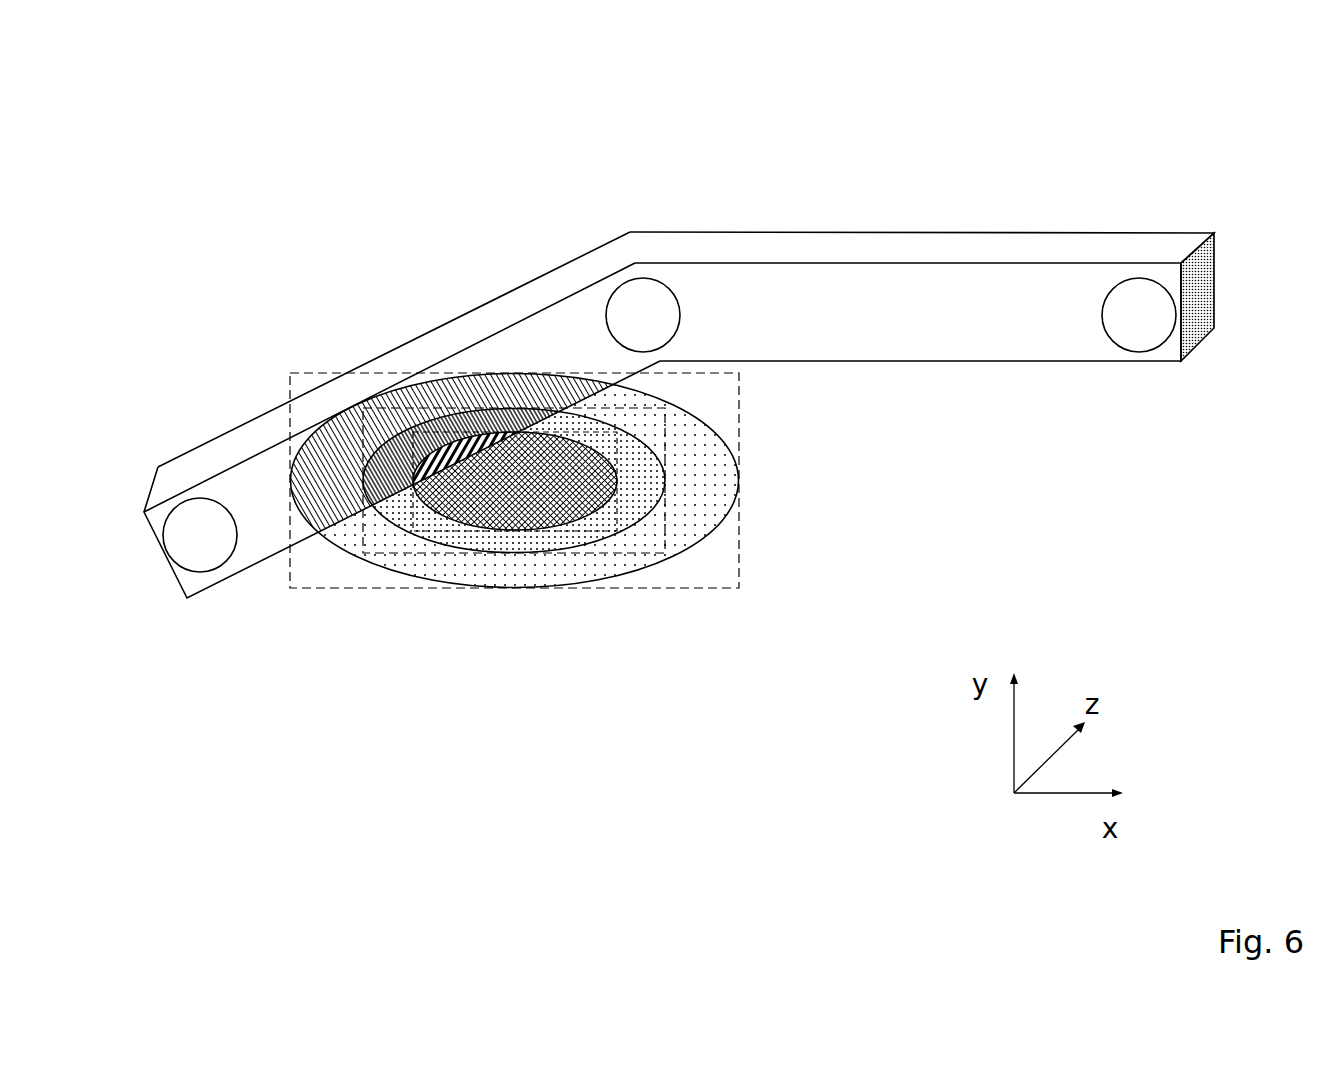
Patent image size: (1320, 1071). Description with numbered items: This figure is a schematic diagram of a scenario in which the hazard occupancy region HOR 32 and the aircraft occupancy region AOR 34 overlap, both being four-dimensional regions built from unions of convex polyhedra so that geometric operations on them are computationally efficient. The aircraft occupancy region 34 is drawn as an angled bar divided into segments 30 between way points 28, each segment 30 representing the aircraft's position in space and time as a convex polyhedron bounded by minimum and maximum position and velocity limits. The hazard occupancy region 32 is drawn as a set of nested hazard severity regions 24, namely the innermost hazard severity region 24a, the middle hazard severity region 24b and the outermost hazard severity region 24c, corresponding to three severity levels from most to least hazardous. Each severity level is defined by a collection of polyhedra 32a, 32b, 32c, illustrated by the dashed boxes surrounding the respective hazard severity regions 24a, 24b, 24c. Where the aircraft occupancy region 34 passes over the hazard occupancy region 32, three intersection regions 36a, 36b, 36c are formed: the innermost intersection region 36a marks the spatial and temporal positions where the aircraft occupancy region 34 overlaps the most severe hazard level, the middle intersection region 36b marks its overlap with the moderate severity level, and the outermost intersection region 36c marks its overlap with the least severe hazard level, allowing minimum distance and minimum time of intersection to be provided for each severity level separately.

The hazard severity regions 24 is at (350, 578).
The hazard severity region 24a is at (443, 527).
The hazard severity region 24b is at (640, 520).
The hazard severity region 24c is at (670, 560).
The way points 28 is at (226, 561).
The segments 30 is at (556, 288).
The hazard occupancy region 32 is at (816, 487).
The polyhedron 32a is at (457, 528).
The polyhedron 32b is at (665, 455).
The polyhedron 32c is at (628, 590).
The aircraft occupancy region 34 is at (418, 175).
The innermost intersection region 36a is at (417, 373).
The middle intersection region 36b is at (352, 413).
The outermost intersection region 36c is at (290, 458).